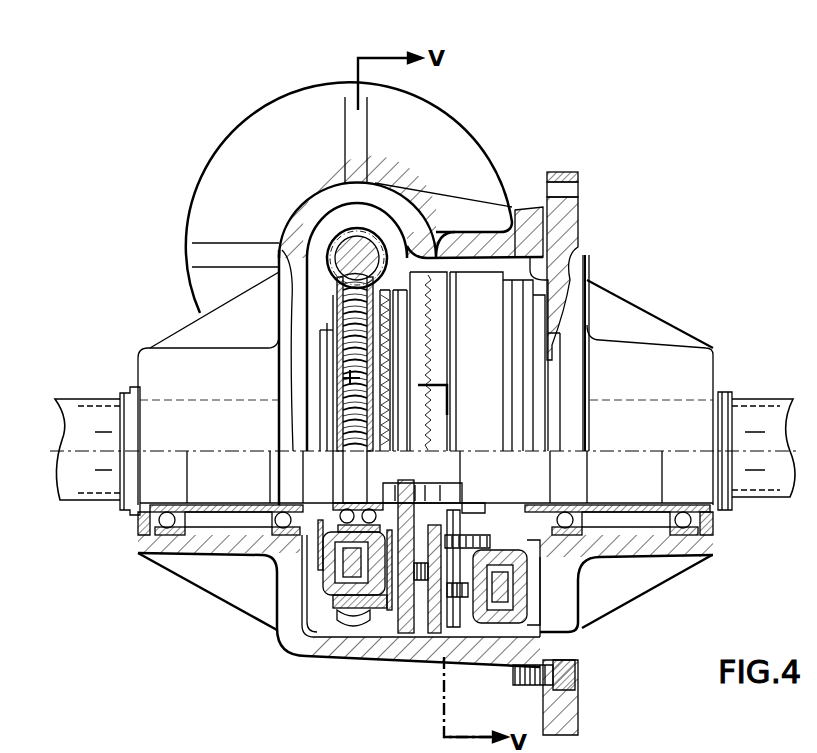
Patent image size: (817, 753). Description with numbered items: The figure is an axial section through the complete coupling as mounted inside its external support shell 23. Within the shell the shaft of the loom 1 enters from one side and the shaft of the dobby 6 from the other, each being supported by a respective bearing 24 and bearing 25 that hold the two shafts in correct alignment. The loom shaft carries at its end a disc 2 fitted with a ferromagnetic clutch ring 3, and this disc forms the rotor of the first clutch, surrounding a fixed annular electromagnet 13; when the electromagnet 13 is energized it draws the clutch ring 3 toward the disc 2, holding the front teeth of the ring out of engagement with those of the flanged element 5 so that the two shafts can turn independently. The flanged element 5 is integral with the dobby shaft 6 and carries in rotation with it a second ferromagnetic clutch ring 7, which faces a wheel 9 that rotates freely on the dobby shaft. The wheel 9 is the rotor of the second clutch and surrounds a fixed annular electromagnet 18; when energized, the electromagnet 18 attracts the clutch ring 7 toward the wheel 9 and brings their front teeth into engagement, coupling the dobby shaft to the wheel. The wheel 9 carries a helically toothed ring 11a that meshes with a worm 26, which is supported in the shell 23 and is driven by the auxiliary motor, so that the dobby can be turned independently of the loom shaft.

The shaft of the loom 1 is at (760, 483).
The disc 2 is at (457, 623).
The clutch ring 3 is at (440, 612).
The flanged element 5 is at (420, 633).
The shaft of the dobby 6 is at (80, 484).
The clutch ring 7 is at (412, 625).
The wheel 9 is at (331, 622).
The helically toothed ring 11a is at (350, 397).
The electromagnet 13 is at (523, 607).
The electromagnet 18 is at (337, 583).
The external support shell 23 is at (298, 647).
The bearing 24 is at (690, 555).
The bearing 25 is at (250, 562).
The worm 26 is at (362, 240).